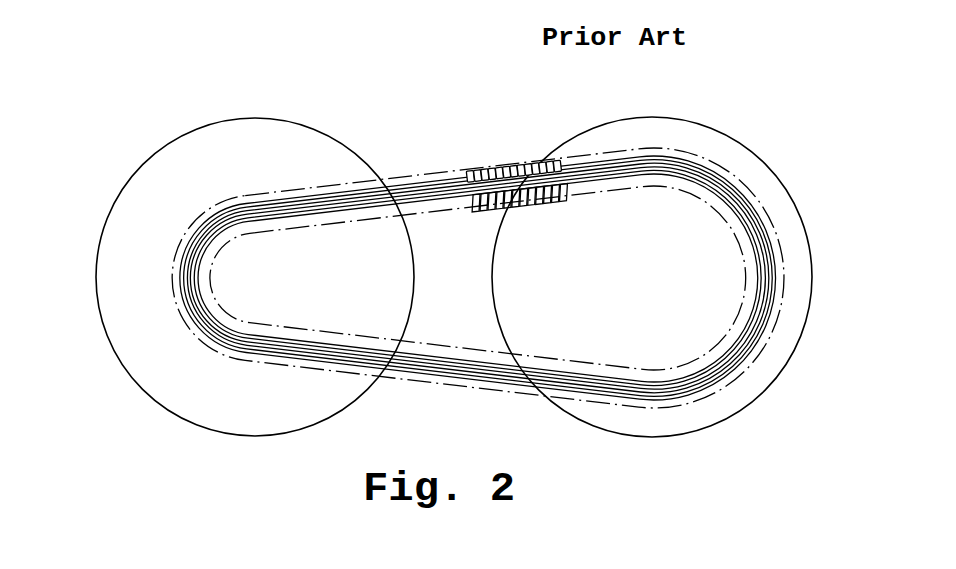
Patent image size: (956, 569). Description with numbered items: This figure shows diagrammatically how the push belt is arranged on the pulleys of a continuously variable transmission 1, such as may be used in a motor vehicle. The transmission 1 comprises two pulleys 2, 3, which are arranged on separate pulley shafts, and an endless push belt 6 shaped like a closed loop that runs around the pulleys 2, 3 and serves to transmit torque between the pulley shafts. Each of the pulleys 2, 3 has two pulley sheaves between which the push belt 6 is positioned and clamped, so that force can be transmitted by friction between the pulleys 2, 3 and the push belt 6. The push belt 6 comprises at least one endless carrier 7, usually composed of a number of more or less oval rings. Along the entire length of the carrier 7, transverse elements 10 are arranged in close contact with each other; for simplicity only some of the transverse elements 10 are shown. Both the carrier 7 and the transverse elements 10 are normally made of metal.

The continuously variable transmission 1 is at (124, 103).
The pulley 2 is at (218, 157).
The pulley 3 is at (701, 137).
The push belt 6 is at (322, 190).
The endless carrier 7 is at (420, 183).
The transverse elements 10 is at (488, 170).